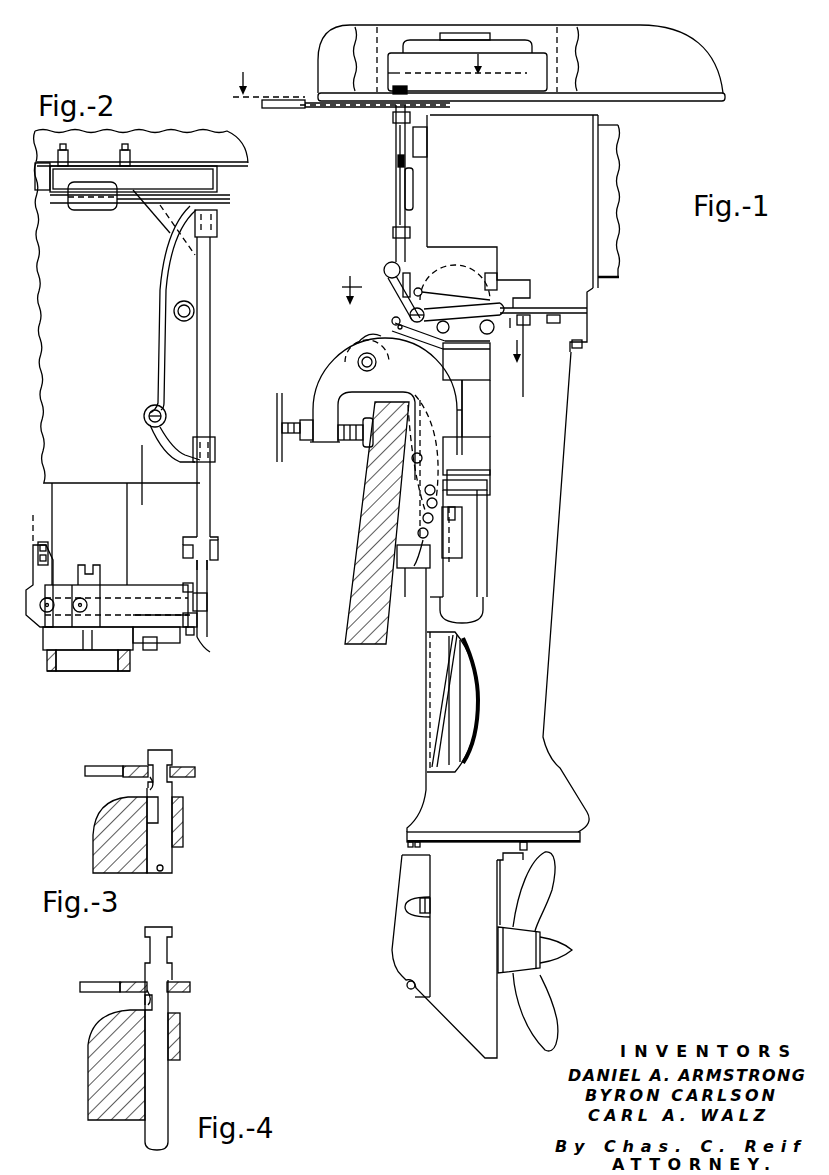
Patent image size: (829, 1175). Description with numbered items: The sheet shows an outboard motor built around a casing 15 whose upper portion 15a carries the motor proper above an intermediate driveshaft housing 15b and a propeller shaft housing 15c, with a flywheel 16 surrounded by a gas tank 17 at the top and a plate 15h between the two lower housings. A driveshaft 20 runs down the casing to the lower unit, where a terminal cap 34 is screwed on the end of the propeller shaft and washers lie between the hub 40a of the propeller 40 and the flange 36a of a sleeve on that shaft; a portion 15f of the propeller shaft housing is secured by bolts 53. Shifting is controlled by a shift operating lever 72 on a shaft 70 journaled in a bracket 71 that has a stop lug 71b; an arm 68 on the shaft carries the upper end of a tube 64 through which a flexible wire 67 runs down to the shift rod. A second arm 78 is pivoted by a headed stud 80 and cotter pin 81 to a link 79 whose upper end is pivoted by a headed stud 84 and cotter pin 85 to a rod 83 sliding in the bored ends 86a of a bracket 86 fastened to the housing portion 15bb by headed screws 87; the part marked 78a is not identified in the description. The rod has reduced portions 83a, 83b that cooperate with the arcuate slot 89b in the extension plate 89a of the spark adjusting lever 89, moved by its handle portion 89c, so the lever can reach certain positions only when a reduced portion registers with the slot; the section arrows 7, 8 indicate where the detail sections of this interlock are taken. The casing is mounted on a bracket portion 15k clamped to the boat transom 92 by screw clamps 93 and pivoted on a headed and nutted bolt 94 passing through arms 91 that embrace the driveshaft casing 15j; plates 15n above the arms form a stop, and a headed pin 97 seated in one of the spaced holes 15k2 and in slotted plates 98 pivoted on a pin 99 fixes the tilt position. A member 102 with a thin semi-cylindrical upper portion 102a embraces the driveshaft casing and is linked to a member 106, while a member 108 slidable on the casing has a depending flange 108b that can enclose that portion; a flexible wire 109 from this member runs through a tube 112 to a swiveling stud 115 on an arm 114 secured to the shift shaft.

In FIG. 1, the section line 7- 7 is at (430, 311).
In FIG. 1, the section line 8- 8 is at (380, 75).
In FIG. 1, the casing 15 is at (575, 519).
In FIG. 1, the upper portion 15a is at (575, 328).
In FIG. 2, the upper portion 15a is at (110, 643).
In FIG. 1, the driveshaft housing 15b is at (565, 458).
In FIG. 1, the housing portion 15bb is at (590, 174).
In FIG. 2, the housing portion 15bb is at (117, 507).
In FIG. 1, the propeller shaft housing 15c is at (407, 850).
In FIG. 1, the portion of propeller shaft housing 15f is at (397, 955).
In FIG. 1, the plate 15h is at (575, 842).
In FIG. 1, the driveshaft casing 15j is at (470, 585).
In FIG. 2, the driveshaft casing 15j is at (82, 665).
In FIG. 1, the clamp bracket portion 15k is at (320, 389).
In FIG. 1, the spaced holes 15k2 is at (460, 503).
In FIG. 1, the spaced plates 15n is at (362, 341).
In FIG. 1, the flywheel 16 is at (543, 70).
In FIG. 2, the flywheel 16 is at (182, 152).
In FIG. 1, the gas tank 17 is at (712, 76).
In FIG. 1, the driveshaft 20 is at (462, 716).
In FIG. 1, the terminal cap 34 is at (562, 948).
In FIG. 1, the flange 36a is at (545, 960).
In FIG. 1, the propeller 40 is at (555, 898).
In FIG. 1, the propeller hub 40a is at (545, 978).
In FIG. 1, the bolts 53 is at (405, 905).
In FIG. 1, the tube 64 is at (447, 686).
In FIG. 1, the flexible wire 67 is at (445, 300).
In FIG. 2, the flexible wire 67 is at (90, 562).
In FIG. 1, the arm 68 is at (450, 291).
In FIG. 2, the arm 68 is at (100, 568).
In FIG. 2, the shaft 70 is at (136, 597).
In FIG. 1, the bracket 71 is at (523, 355).
In FIG. 2, the bracket 71 is at (138, 645).
In FIG. 2, the stop lug 71b is at (188, 592).
In FIG. 1, the shift operating lever 72 is at (388, 262).
In FIG. 1, the arm 78 is at (423, 337).
In FIG. 2, the arm 78 is at (205, 637).
In FIG. 1, the pivot pin 78a is at (404, 333).
In FIG. 2, the pivot pin 78a is at (186, 613).
In FIG. 1, the link 79 is at (400, 296).
In FIG. 2, the link 79 is at (208, 597).
In FIG. 1, the headed stud 80 is at (392, 321).
In FIG. 2, the headed stud 80 is at (207, 623).
In FIG. 2, the cotter pin 81 is at (190, 637).
In FIG. 1, the rod 83 is at (403, 189).
In FIG. 2, the rod 83 is at (210, 345).
In FIG. 3, the rod 83 is at (175, 861).
In FIG. 4, the rod 83 is at (165, 1091).
In FIG. 3, the reduced portion 83a is at (175, 784).
In FIG. 4, the reduced portion 83a is at (170, 947).
In FIG. 3, the reduced portion 83b is at (133, 791).
In FIG. 4, the reduced portion 83b is at (138, 1000).
In FIG. 1, the headed stud 84 is at (396, 287).
In FIG. 2, the headed stud 84 is at (218, 547).
In FIG. 2, the cotter pin 85 is at (190, 540).
In FIG. 1, the bracket 86 is at (395, 180).
In FIG. 2, the bracket 86 is at (160, 357).
In FIG. 3, the bracket 86 is at (100, 860).
In FIG. 4, the bracket 86 is at (95, 1086).
In FIG. 1, the bracket ends 86a is at (393, 117).
In FIG. 2, the bracket ends 86a is at (218, 225).
In FIG. 3, the bracket ends 86a is at (185, 830).
In FIG. 4, the bracket ends 86a is at (182, 1038).
In FIG. 1, the headed screws 87 is at (398, 162).
In FIG. 2, the headed screws 87 is at (174, 310).
In FIG. 1, the spark adjusting lever 89 is at (308, 110).
In FIG. 1, the extension plate 89a is at (437, 108).
In FIG. 2, the extension plate 89a is at (217, 197).
In FIG. 3, the extension plate 89a is at (100, 765).
In FIG. 4, the extension plate 89a is at (85, 980).
In FIG. 2, the arcuate slot 89b is at (165, 214).
In FIG. 3, the arcuate slot 89b is at (152, 752).
In FIG. 4, the arcuate slot 89b is at (140, 985).
In FIG. 1, the handle portion 89c is at (290, 109).
In FIG. 2, the handle portion 89c is at (93, 212).
In FIG. 1, the arms 91 is at (478, 370).
In FIG. 2, the arms 91 is at (48, 668).
In FIG. 1, the boat transom 92 is at (365, 514).
In FIG. 1, the screw clamps 93 is at (348, 443).
In FIG. 1, the bolt 94 is at (357, 362).
In FIG. 1, the headed pin 97 is at (408, 574).
In FIG. 1, the spaced plates 98 is at (405, 533).
In FIG. 1, the pin 99 is at (420, 453).
In FIG. 1, the member 102 is at (457, 547).
In FIG. 1, the upper portion 102a is at (457, 516).
In FIG. 1, the member 106 is at (440, 402).
In FIG. 1, the member 108 is at (467, 448).
In FIG. 1, the depending flange 108b is at (470, 482).
In FIG. 1, the flexible wire 109 is at (410, 290).
In FIG. 2, the flexible wire 109 is at (50, 555).
In FIG. 1, the tube 112 is at (493, 302).
In FIG. 1, the arm 114 is at (405, 311).
In FIG. 2, the arm 114 is at (46, 545).
In FIG. 2, the swiveling stud 115 is at (38, 560).